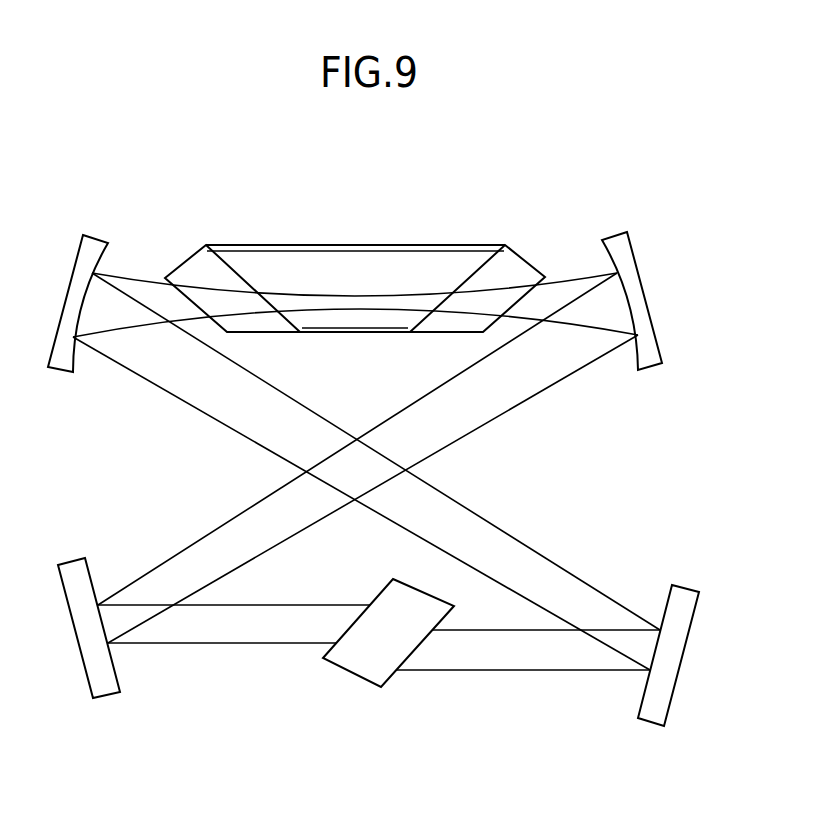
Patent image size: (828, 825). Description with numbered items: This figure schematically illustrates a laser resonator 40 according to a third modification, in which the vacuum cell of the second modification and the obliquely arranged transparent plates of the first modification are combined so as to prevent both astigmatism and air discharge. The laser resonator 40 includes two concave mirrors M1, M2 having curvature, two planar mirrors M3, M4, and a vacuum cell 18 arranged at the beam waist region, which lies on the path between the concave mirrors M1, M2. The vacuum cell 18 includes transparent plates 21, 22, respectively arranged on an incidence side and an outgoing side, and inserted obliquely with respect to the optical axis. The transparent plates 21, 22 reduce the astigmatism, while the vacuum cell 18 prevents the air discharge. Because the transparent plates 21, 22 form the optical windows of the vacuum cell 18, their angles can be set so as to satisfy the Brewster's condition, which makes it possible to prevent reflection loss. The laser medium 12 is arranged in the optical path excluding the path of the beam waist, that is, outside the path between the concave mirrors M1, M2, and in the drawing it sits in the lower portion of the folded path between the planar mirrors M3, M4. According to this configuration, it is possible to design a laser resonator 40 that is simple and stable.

The laser resonator 40 is at (334, 200).
The vacuum cell 18 is at (397, 244).
The transparent plate 22 is at (188, 259).
The transparent plate 21 is at (522, 258).
The laser medium 12 is at (389, 582).
The concave mirror M1 is at (650, 372).
The concave mirror M2 is at (63, 372).
The planar mirror M3 is at (686, 585).
The planar mirror M4 is at (70, 558).